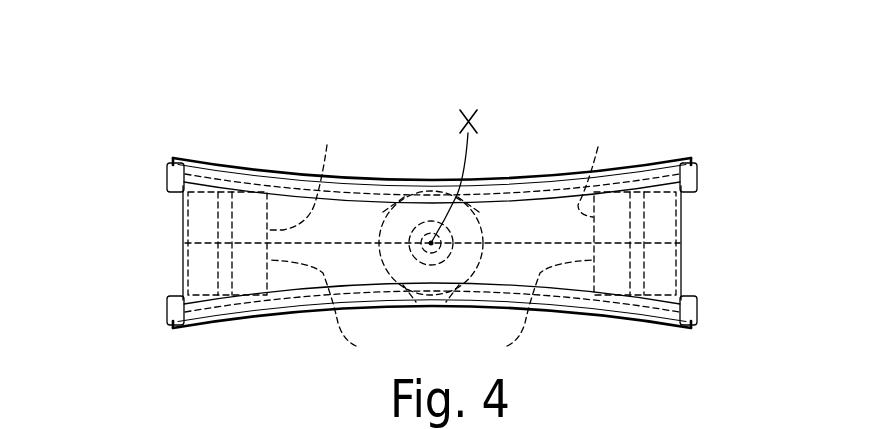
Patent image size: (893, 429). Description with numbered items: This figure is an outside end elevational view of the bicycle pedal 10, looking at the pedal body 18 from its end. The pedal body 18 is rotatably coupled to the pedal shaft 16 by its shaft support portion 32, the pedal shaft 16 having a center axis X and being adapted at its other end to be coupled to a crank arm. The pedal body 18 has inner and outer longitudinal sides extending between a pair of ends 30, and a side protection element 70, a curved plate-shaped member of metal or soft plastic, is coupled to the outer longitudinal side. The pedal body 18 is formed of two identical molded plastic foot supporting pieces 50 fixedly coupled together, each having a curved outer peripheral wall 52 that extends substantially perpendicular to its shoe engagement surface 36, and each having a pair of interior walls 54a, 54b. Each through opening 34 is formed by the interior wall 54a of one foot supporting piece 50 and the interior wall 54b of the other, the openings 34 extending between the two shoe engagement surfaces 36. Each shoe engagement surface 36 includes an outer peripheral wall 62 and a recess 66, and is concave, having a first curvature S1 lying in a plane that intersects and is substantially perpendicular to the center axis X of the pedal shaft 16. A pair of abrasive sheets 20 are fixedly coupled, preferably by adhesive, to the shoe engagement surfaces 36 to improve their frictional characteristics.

The bicycle pedal 10 is at (431, 227).
The pedal shaft 16 is at (377, 183).
The pedal body 18 is at (705, 163).
The abrasive sheets 20 is at (437, 227).
The ends 30 is at (374, 244).
The shaft support portion 32 is at (480, 217).
The through openings 34 is at (280, 273).
The shoe engagement surfaces 36 is at (432, 169).
The foot supporting pieces 50 is at (481, 214).
The curved outer peripheral wall 52 is at (700, 178).
The interior wall 54a is at (430, 244).
The interior wall 54b is at (445, 244).
The outer peripheral wall 62 is at (173, 158).
The recess 66 is at (229, 168).
The side protection element 70 is at (542, 218).
The first curvature S1 is at (214, 160).